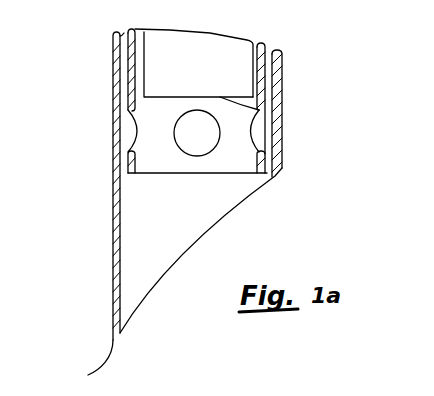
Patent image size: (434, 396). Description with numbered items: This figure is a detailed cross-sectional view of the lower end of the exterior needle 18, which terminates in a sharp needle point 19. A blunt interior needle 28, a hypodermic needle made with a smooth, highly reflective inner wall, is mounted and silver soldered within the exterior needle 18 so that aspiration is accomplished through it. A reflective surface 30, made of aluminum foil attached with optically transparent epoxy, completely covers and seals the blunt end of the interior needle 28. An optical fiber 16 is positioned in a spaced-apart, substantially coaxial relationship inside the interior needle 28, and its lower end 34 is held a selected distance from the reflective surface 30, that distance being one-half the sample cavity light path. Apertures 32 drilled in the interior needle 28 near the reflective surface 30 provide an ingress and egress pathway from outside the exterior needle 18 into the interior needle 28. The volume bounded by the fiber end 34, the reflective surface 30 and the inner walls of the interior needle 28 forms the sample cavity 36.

The optical fiber 16 is at (236, 62).
The exterior needle 18 is at (113, 195).
The sharp needle point 19 is at (172, 282).
The interior needle 28 is at (253, 80).
The reflective surface 30 is at (207, 174).
The apertures 32 is at (220, 123).
The lower end of the optical fiber 34 is at (262, 110).
The sample cavity 36 is at (245, 153).